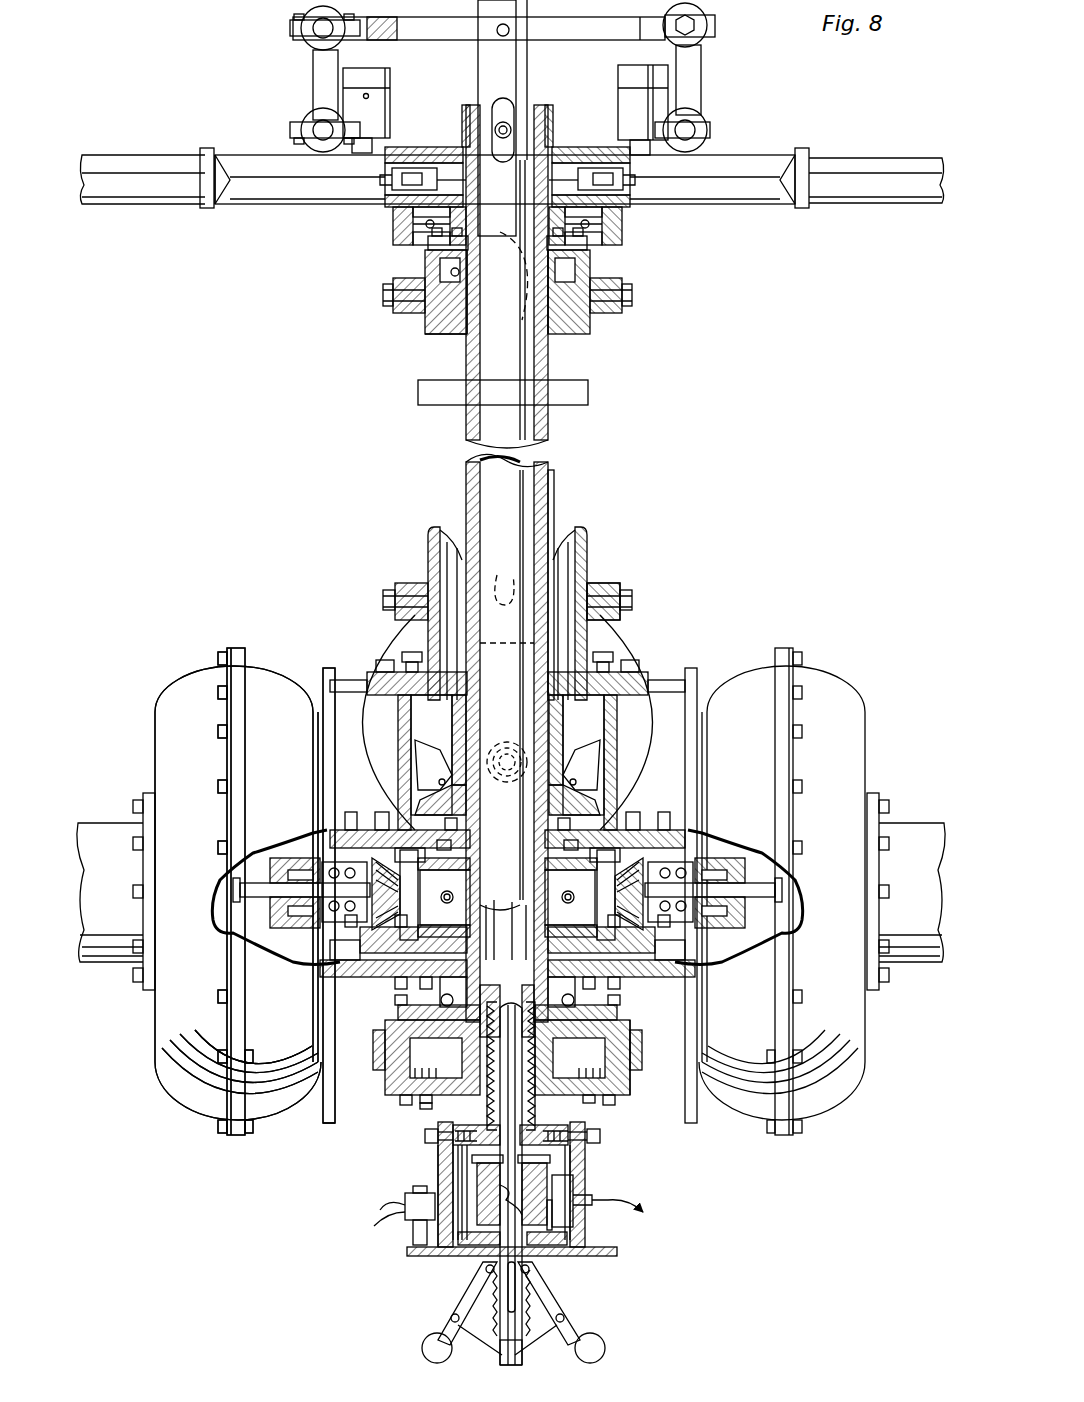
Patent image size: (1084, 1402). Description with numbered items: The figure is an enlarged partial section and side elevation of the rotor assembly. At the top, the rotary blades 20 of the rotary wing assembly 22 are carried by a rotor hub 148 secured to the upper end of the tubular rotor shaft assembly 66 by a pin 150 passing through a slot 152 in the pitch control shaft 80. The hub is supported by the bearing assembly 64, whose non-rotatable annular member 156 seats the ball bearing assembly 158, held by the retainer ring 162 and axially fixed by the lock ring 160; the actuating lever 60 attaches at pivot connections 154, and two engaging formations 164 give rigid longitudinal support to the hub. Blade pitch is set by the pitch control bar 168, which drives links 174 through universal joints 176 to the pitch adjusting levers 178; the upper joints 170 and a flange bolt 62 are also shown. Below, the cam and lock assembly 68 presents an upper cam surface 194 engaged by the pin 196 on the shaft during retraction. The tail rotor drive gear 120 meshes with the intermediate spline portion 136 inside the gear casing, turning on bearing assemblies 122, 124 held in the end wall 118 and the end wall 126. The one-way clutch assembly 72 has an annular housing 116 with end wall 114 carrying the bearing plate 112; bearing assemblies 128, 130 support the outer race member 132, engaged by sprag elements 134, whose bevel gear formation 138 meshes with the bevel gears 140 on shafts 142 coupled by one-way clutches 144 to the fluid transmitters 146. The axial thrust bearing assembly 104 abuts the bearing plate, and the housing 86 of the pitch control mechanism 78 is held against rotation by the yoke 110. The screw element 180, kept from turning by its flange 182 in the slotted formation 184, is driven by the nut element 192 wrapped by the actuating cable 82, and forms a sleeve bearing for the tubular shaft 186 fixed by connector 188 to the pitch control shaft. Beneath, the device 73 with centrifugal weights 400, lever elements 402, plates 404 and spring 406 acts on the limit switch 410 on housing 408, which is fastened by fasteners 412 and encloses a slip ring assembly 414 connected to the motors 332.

The rotary blades 20 is at (842, 170).
The rotary wing assembly 22 is at (225, 218).
The actuating lever 60 is at (592, 315).
The flange bolt 62 is at (602, 598).
The bearing assembly 64 is at (400, 322).
The rotor shaft assembly 66 is at (552, 480).
The cam and lock assembly 68 is at (592, 546).
The one-way clutch assembly 72 is at (644, 1020).
The device 73 is at (614, 1323).
The pitch control mechanism 78 is at (376, 1126).
The pitch control shaft 80 is at (492, 60).
The actuating cable 82 is at (560, 1058).
The housing 86 is at (576, 1080).
The axial thrust bearing assembly 104 is at (440, 1000).
The yoke 110 is at (330, 1075).
The bearing plate 112 is at (640, 996).
The end wall 114 is at (660, 966).
The annular housing 116 is at (342, 922).
The end wall 118 is at (350, 832).
The tail rotor drive gear 120 is at (632, 782).
The bearing assembly 122 is at (420, 830).
The bearing assembly 124 is at (602, 690).
The end wall 126 is at (385, 690).
The bearing assembly 128 is at (658, 836).
The bearing assembly 130 is at (672, 932).
The outer race member 132 is at (400, 986).
The sprag elements 134 is at (462, 906).
The intermediate spline portion 136 is at (556, 522).
The bevel gear formation 138 is at (345, 962).
The bevel gears 140 is at (324, 848).
The shafts 142 is at (255, 888).
The one-way clutches 144 is at (760, 864).
The fluid transmitters 146 is at (826, 672).
The rotor hub 148 is at (657, 190).
The pin 150 is at (512, 136).
The slot 152 is at (485, 124).
The pivot connections 154 is at (622, 292).
The annular member 156 is at (442, 332).
The ball bearing assembly 158 is at (445, 276).
The lock ring 160 is at (440, 240).
The retainer ring 162 is at (575, 242).
The engaging formations 164 is at (505, 283).
The pitch control bar 168 is at (590, 26).
The pivot 170 is at (300, 14).
The links 174 is at (312, 71).
The universal joints 176 is at (305, 144).
The pitch adjusting levers 178 is at (690, 148).
The screw element 180 is at (475, 1134).
The flange 182 is at (566, 1160).
The slotted formation 184 is at (572, 1126).
The tubular shaft 186 is at (510, 1226).
The connector 188 is at (426, 1050).
The nut element 192 is at (428, 1108).
The upper cam surface 194 is at (458, 548).
The pin 196 is at (565, 388).
The motors 332 is at (650, 105).
The centrifugal weights 400 is at (607, 1348).
The lever elements 402 is at (565, 1298).
The plates 404 is at (608, 1252).
The spring 406 is at (490, 1306).
The housing 408 is at (440, 1170).
The limit switch 410 is at (410, 1226).
The fasteners 412 is at (598, 1142).
The slip ring assembly 414 is at (552, 1230).